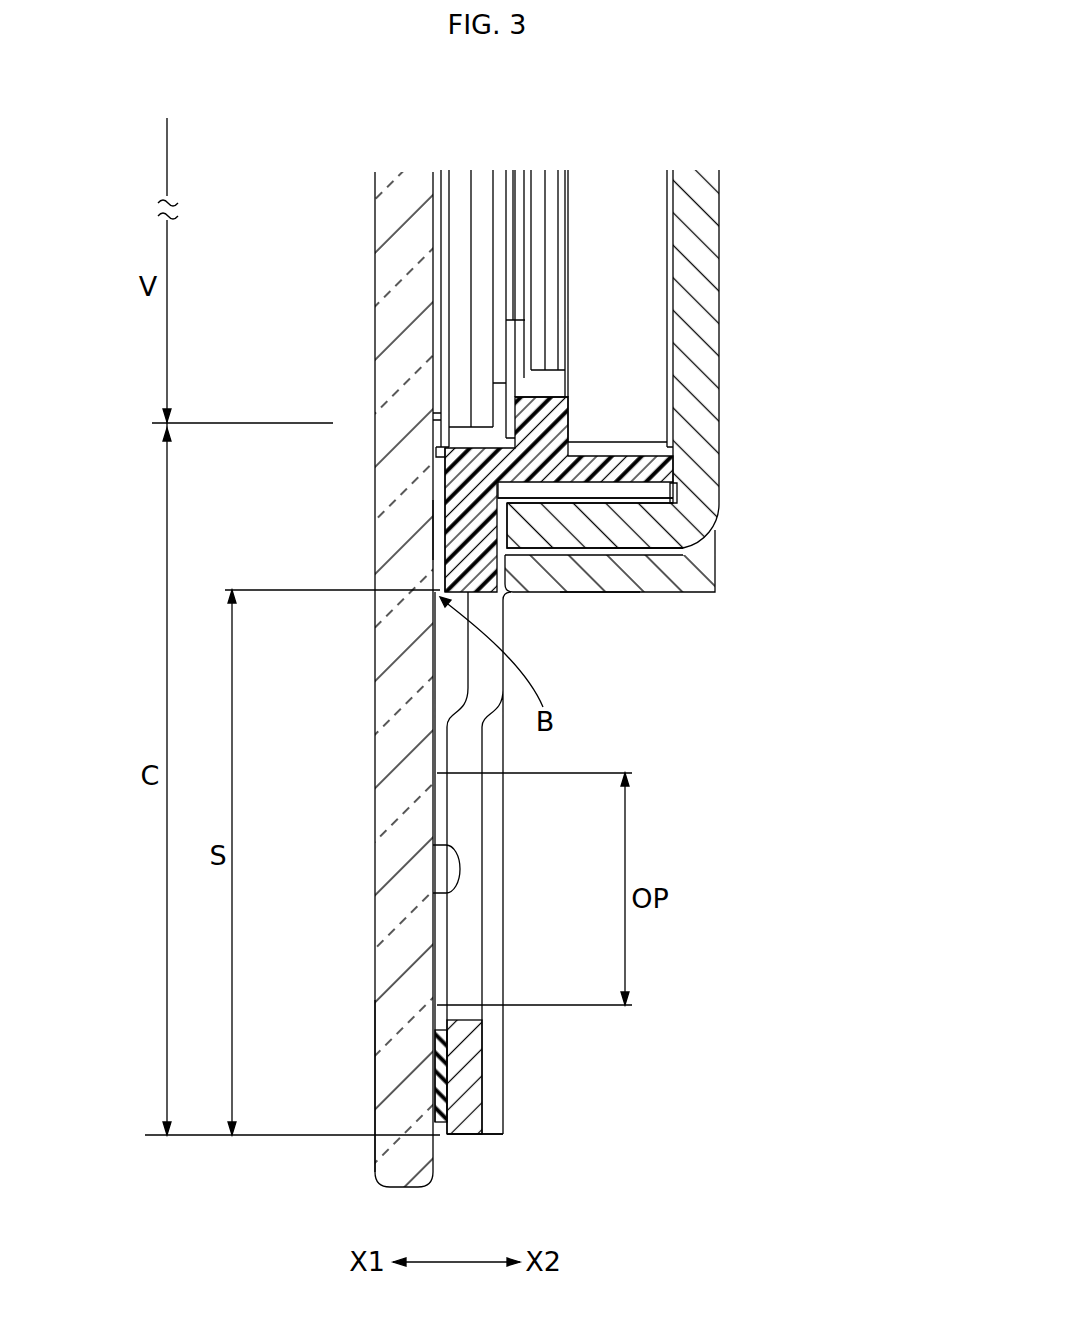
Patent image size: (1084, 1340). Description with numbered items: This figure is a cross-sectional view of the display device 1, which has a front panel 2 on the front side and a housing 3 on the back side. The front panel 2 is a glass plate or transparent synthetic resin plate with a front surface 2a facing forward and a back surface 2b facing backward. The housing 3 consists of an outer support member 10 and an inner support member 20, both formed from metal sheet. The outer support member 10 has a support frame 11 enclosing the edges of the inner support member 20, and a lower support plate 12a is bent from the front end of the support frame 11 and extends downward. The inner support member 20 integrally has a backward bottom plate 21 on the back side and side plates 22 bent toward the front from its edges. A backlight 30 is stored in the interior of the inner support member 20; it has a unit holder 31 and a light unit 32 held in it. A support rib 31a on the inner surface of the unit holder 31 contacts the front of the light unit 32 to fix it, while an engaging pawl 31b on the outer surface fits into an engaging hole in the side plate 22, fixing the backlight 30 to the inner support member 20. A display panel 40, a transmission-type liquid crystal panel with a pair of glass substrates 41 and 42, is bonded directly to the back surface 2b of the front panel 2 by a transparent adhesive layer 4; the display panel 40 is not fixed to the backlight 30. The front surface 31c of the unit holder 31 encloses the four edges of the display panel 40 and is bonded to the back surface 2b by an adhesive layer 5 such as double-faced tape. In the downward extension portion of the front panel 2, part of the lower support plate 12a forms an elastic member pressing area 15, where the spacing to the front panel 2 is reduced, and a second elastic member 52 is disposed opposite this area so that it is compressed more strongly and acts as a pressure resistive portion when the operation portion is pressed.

The display device 1 is at (317, 165).
The front panel 2 is at (405, 456).
The front surface 2a is at (375, 1030).
The back surface 2b is at (440, 868).
The housing 3 is at (818, 523).
The transparent adhesive layer 4 is at (432, 223).
The adhesive layer 5 is at (438, 525).
The outer support member 10 is at (718, 575).
The support frame 11 is at (595, 575).
The lower support plate 12a is at (470, 1136).
The elastic member pressing area 15 is at (470, 1048).
The inner support member 20 is at (710, 498).
The backward bottom plate 21 is at (708, 272).
The side plate 22 is at (656, 530).
The backlight 30 is at (808, 342).
The unit holder 31 is at (620, 490).
The support rib 31a is at (590, 405).
The engaging pawl 31b is at (560, 505).
The front surface 31c is at (445, 570).
The light unit 32 is at (648, 378).
The display panel 40 is at (528, 156).
The glass substrate 41 is at (457, 195).
The glass substrate 42 is at (483, 240).
The second elastic member 52 is at (448, 1100).